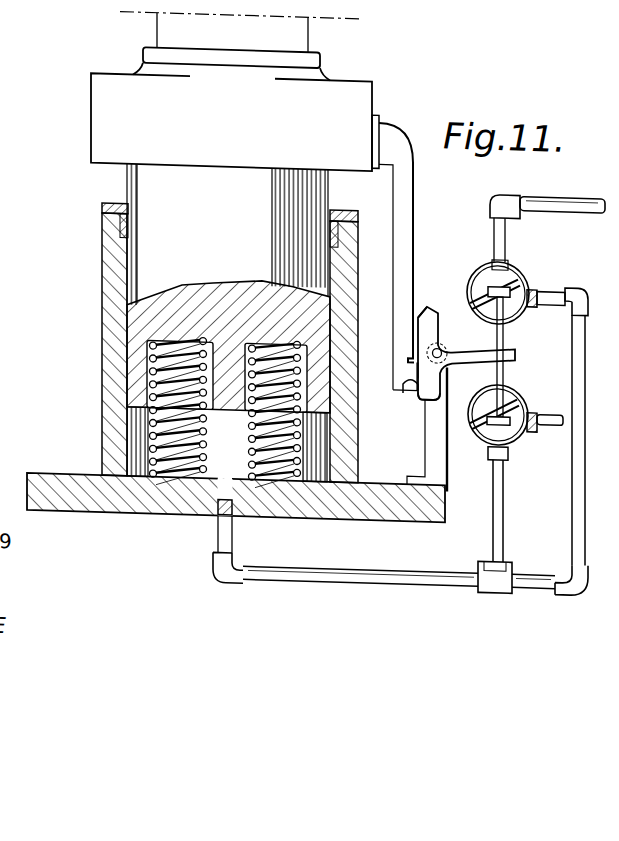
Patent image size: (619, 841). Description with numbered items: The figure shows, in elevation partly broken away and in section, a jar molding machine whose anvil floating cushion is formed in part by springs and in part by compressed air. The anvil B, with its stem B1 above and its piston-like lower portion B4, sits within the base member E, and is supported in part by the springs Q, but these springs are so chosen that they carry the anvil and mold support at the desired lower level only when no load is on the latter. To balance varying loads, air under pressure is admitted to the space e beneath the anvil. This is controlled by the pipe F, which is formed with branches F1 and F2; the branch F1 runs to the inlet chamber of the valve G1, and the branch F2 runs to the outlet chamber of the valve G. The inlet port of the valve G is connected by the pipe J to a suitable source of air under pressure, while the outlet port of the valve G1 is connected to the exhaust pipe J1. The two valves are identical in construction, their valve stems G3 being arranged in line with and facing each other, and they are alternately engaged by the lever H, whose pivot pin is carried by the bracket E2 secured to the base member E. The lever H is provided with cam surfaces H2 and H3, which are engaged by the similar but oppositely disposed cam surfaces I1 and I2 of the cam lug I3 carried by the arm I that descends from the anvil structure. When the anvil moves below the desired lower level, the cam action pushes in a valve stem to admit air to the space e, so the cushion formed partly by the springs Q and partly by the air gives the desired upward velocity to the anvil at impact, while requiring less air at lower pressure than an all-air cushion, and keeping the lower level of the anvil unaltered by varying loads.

The anvil B is at (235, 122).
The piston rod stem B1 is at (240, 47).
The piston B4 is at (228, 323).
The base member E is at (115, 350).
The bracket E2 is at (438, 459).
The space e is at (223, 456).
The springs Q is at (250, 422).
The arm I is at (398, 258).
The cam surface I1 is at (408, 341).
The cam surface I2 is at (402, 366).
The cam lug I3 is at (400, 363).
The lever H is at (438, 320).
The cam surface H2 is at (423, 307).
The cam surface H3 is at (420, 388).
The pipe J is at (507, 217).
The exhaust pipe J1 is at (535, 409).
The valve G is at (520, 260).
The valve G1 is at (520, 380).
The valve stem G3 is at (505, 330).
The pipe F is at (400, 563).
The branch F1 is at (500, 502).
The branch F2 is at (573, 521).